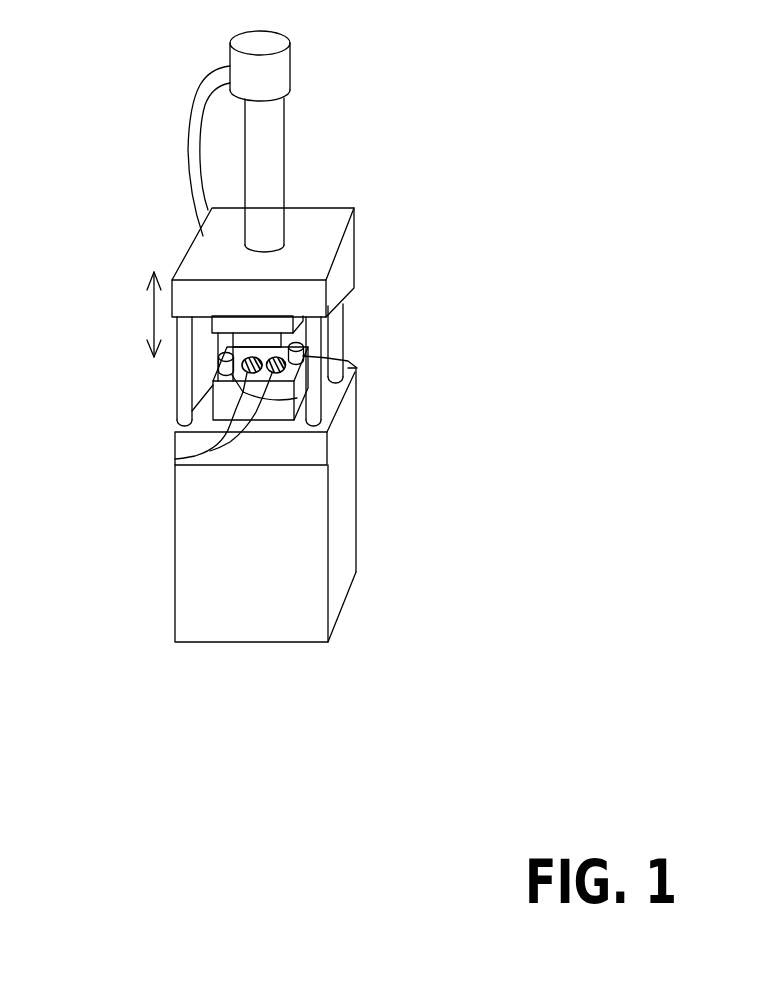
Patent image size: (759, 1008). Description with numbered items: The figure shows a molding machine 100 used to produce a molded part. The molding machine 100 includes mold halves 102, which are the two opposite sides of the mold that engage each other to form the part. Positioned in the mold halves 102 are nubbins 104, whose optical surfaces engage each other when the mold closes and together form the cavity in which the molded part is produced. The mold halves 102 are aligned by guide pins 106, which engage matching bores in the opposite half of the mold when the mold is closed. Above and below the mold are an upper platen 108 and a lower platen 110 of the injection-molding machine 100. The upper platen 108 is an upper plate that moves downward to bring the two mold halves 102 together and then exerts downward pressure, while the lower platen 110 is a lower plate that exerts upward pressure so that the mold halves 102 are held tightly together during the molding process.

The molding machine 100 is at (674, 58).
The mold halves 102 is at (277, 347).
The nubbins 104 is at (175, 459).
The guide pins 106 is at (297, 398).
The upper platen 108 is at (356, 232).
The lower platen 110 is at (357, 388).